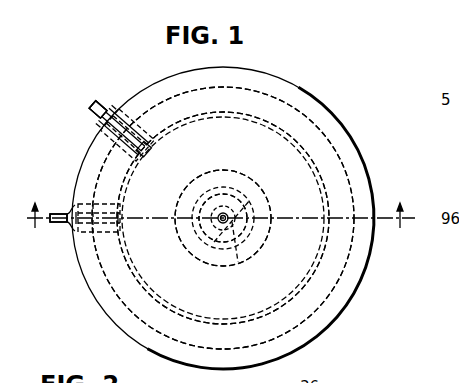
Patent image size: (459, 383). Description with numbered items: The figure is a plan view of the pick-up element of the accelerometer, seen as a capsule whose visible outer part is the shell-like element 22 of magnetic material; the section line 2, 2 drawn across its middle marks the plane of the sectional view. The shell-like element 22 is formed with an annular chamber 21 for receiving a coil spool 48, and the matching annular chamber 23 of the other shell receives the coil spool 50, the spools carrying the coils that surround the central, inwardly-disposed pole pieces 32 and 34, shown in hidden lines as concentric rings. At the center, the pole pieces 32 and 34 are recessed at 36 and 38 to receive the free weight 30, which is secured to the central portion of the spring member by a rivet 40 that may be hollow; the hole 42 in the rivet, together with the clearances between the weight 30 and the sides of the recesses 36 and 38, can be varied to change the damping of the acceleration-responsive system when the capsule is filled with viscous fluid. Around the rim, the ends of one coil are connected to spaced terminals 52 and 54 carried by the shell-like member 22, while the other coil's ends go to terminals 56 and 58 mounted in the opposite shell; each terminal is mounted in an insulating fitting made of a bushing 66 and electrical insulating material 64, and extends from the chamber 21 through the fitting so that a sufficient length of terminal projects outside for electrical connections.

The section line 2- 2 is at (218, 228).
The annular chamber 21 is at (322, 178).
The shell-like element 22 is at (343, 128).
The annular chamber 23 is at (223, 218).
The free weight 30 is at (248, 197).
The pole piece 32 is at (266, 232).
The pole piece 34 is at (223, 218).
The recess 36 is at (194, 242).
The recess 38 is at (223, 218).
The rivet 40 is at (238, 262).
The hole 42 is at (260, 178).
The coil spool 48 is at (323, 248).
The coil spool 50 is at (223, 218).
The terminal 52 is at (62, 212).
The terminal 54 is at (96, 106).
The terminal 56 is at (58, 218).
The terminal 58 is at (98, 109).
The electrical insulating material 64 is at (100, 123).
The bushing 66 is at (137, 108).